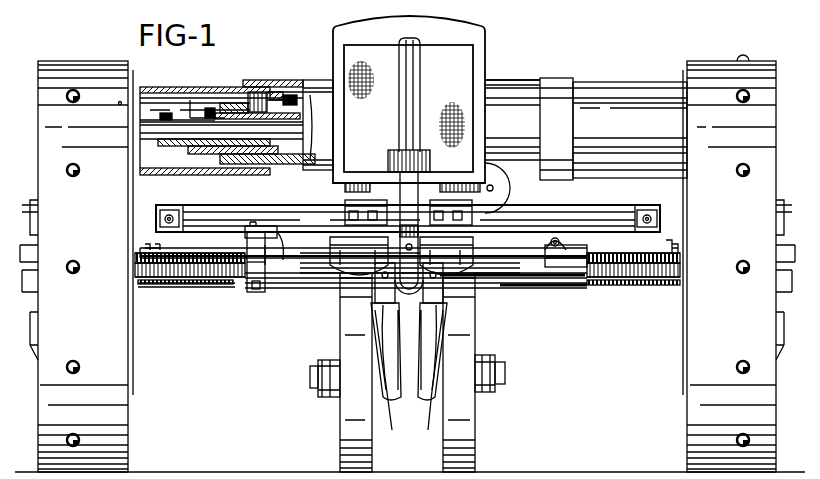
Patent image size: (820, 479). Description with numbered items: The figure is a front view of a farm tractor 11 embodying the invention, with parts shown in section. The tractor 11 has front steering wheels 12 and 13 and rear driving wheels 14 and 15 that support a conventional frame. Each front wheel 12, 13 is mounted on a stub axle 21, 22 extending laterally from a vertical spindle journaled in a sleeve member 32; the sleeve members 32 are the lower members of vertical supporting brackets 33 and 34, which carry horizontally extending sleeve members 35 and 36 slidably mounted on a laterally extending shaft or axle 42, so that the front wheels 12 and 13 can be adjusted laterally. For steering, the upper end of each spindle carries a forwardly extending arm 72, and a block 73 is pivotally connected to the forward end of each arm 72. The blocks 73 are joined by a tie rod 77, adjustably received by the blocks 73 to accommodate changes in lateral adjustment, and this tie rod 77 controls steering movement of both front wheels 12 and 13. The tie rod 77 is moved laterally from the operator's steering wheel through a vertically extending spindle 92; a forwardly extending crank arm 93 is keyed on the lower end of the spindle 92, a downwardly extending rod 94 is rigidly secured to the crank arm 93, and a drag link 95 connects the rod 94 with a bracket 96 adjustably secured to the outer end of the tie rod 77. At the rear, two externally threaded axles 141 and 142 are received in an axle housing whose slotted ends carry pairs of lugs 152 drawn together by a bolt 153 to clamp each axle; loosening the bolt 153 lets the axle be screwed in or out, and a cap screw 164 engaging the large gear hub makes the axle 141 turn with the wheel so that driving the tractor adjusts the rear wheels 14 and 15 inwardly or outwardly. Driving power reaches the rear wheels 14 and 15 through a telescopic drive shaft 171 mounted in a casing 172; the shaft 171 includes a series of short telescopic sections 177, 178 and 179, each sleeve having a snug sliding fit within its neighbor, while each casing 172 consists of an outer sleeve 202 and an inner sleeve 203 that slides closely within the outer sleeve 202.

The farm tractor 11 is at (485, 50).
The front steering wheel 12 is at (346, 340).
The front steering wheel 13 is at (462, 343).
The rear driving wheel 14 is at (112, 427).
The rear driving wheel 15 is at (700, 395).
The stub axle 21 is at (312, 380).
The stub axle 22 is at (505, 375).
The sleeve member 32 is at (392, 375).
The vertical supporting bracket 33 is at (375, 252).
The vertical supporting bracket 34 is at (433, 250).
The horizontally extending sleeve member 35 is at (358, 200).
The horizontally extending sleeve member 36 is at (440, 200).
The laterally extending shaft or axle 42 is at (545, 215).
The forwardly extending arm 72 is at (375, 310).
The block 73 is at (380, 290).
The tie rod 77 is at (612, 283).
The vertically extending spindle 92 is at (410, 72).
The forwardly extending crank arm 93 is at (415, 150).
The downwardly extending rod 94 is at (404, 200).
The drag link 95 is at (300, 232).
The bracket 96 is at (252, 265).
The axle 141 is at (660, 282).
The axle 142 is at (190, 280).
The lug 152 is at (570, 246).
The bolt 153 is at (550, 243).
The cap screw 164 is at (146, 244).
The telescopic drive shaft 171 is at (296, 86).
The casing 172 is at (518, 85).
The telescopic section 177 is at (232, 103).
The telescopic section 178 is at (210, 108).
The telescopic section 179 is at (168, 110).
The outer sleeve 202 is at (548, 78).
The inner sleeve 203 is at (622, 94).